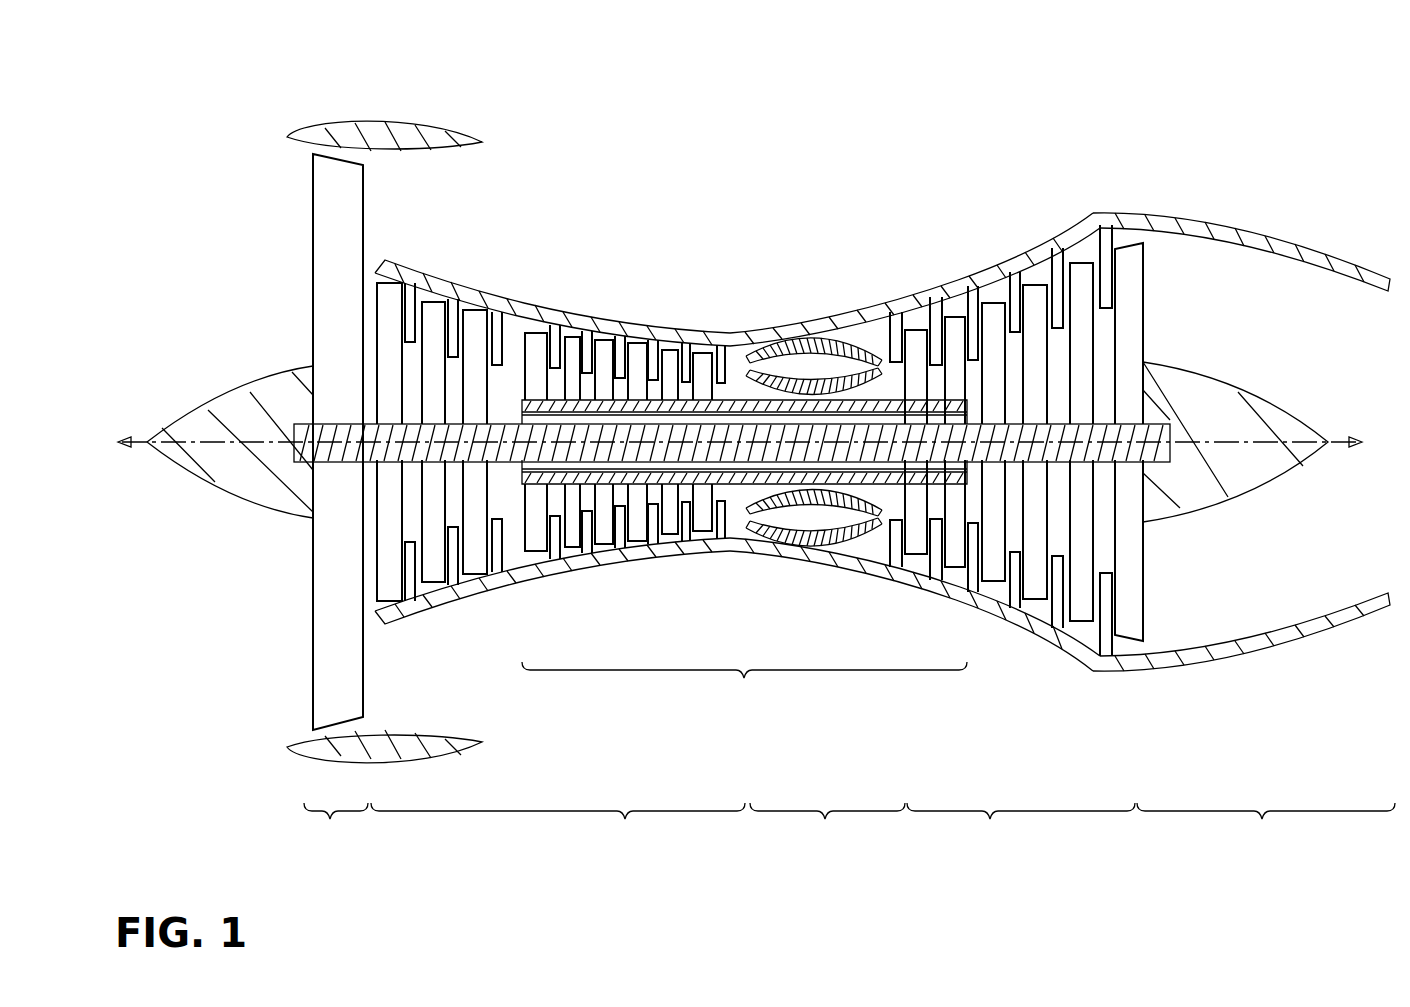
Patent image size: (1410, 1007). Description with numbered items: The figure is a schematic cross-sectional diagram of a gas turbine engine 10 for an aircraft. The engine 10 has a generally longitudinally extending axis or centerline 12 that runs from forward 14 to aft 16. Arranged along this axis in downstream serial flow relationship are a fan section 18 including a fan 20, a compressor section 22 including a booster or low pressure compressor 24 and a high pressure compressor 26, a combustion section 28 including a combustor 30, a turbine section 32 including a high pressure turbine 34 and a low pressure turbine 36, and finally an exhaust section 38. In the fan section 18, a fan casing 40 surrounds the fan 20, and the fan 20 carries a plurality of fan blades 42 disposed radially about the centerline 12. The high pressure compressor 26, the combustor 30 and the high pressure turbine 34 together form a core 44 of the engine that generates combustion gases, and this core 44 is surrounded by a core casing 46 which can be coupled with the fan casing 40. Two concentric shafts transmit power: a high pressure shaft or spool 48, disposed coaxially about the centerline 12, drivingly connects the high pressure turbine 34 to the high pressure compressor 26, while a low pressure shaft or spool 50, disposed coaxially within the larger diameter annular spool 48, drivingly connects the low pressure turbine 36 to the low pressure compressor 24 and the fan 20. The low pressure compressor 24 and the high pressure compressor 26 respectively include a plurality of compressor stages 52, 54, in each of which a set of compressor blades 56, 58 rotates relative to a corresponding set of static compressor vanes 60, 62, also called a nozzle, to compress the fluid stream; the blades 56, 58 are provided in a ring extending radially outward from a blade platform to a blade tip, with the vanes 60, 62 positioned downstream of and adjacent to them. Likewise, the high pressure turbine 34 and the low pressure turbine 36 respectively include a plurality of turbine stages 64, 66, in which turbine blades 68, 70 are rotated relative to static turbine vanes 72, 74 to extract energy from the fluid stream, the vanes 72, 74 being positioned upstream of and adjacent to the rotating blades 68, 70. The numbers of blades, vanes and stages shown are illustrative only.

The gas turbine engine 10 is at (197, 53).
The centerline 12 is at (207, 441).
The forward 14 is at (107, 442).
The aft 16 is at (1374, 442).
The fan section 18 is at (336, 828).
The fan 20 is at (255, 442).
The compressor section 22 is at (558, 828).
The low pressure compressor 24 is at (507, 592).
The high pressure compressor 26 is at (680, 562).
The combustion section 28 is at (827, 828).
The combustor 30 is at (875, 346).
The turbine section 32 is at (1021, 828).
The high pressure turbine 34 is at (890, 589).
The low pressure turbine 36 is at (1022, 633).
The exhaust section 38 is at (1266, 828).
The fan casing 40 is at (380, 121).
The fan blades 42 is at (327, 667).
The core 44 is at (744, 686).
The core casing 46 is at (793, 336).
The high pressure spool 48 is at (744, 402).
The low pressure spool 50 is at (498, 420).
The compressor stages 52 is at (373, 247).
The compressor stages 54 is at (538, 301).
The compressor blades 56 is at (390, 293).
The compressor blades 58 is at (548, 340).
The static compressor vanes 60 is at (410, 296).
The static compressor vanes 62 is at (556, 352).
The turbine stages 64 is at (923, 290).
The turbine stages 66 is at (1059, 235).
The turbine blades 68 is at (957, 333).
The turbine blades 70 is at (1082, 283).
The static turbine vanes 72 is at (940, 335).
The static turbine vanes 74 is at (1058, 300).